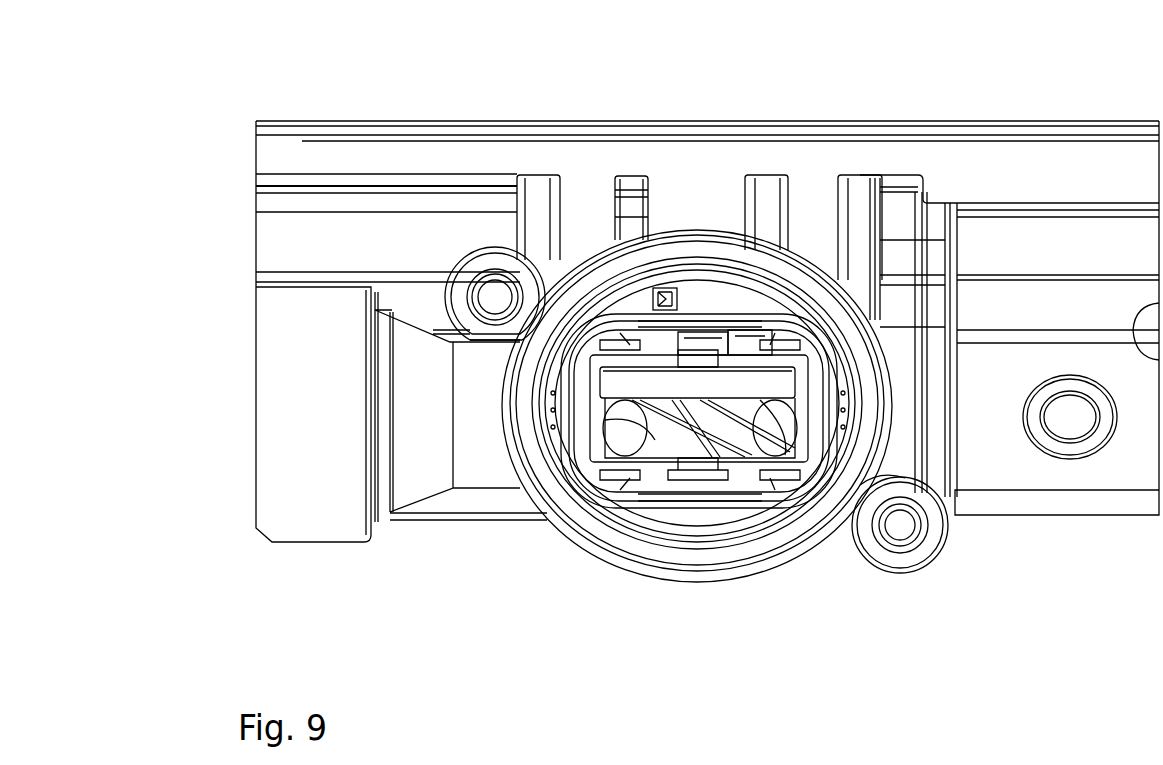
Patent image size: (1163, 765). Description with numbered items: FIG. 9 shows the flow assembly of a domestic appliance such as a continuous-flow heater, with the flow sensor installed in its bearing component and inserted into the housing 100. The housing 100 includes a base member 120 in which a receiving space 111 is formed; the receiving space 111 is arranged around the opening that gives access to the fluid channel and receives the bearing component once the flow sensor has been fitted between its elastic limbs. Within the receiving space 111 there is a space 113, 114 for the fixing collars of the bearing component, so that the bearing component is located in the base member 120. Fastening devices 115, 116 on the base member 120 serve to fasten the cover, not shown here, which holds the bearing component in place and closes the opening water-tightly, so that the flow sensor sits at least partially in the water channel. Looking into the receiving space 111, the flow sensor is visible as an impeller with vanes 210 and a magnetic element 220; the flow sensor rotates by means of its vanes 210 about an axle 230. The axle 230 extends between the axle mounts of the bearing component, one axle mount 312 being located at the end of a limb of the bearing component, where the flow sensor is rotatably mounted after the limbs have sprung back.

The housing 100 is at (825, 108).
The receiving space 111 is at (788, 495).
The space for fixing collar 113 is at (748, 475).
The space for fixing collar 114 is at (747, 342).
The fastening device 115 is at (495, 297).
The fastening device 116 is at (1070, 423).
The base member 120 is at (800, 278).
The vanes 210 is at (625, 410).
The magnetic element 220 is at (657, 387).
The axle 230 is at (697, 467).
The axle mount 312 is at (700, 342).